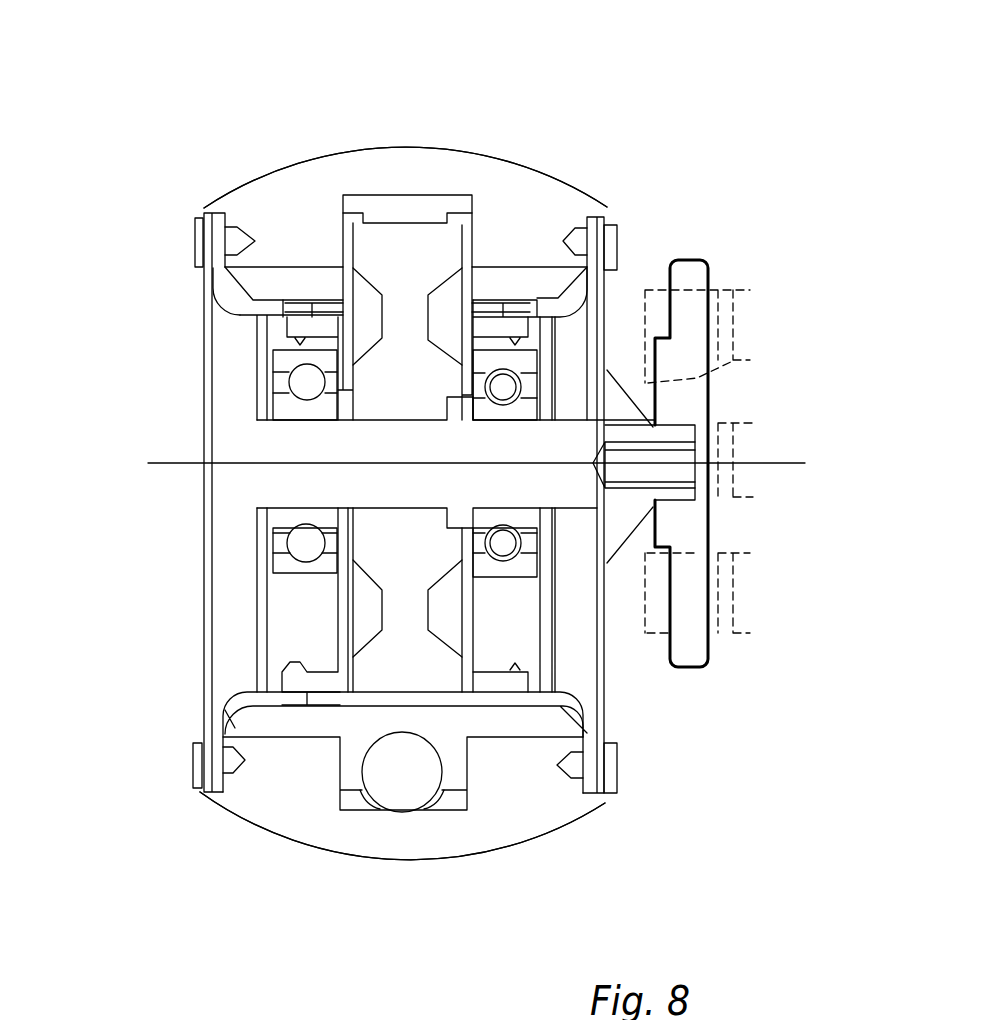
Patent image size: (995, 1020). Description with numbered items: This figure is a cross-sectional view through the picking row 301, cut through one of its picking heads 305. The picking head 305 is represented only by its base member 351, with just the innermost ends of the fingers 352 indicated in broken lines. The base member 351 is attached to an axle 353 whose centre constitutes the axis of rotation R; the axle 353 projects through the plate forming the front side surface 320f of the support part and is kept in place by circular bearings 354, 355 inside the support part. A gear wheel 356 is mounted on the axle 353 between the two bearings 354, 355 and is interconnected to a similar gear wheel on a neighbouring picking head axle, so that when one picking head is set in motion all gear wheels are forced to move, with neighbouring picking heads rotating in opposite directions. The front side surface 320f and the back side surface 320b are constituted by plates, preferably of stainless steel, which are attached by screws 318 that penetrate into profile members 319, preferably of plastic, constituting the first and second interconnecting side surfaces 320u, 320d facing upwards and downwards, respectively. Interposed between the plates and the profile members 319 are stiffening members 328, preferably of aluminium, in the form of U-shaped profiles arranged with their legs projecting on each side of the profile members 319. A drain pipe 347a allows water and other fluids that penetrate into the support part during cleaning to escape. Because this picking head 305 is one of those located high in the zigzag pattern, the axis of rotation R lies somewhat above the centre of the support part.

The picking row 301 is at (518, 137).
The picking head 305 is at (766, 254).
The screws 318 is at (197, 243).
The profile members 319 is at (460, 160).
The first interconnecting side surface 320u is at (342, 147).
The second interconnecting side surface 320d is at (533, 840).
The back side surface 320b is at (200, 590).
The front side surface 320f is at (611, 305).
The stiffening members 328 is at (222, 277).
The drain pipe 347a is at (395, 790).
The base member 351 is at (703, 663).
The fingers 352 is at (740, 607).
The axle 353 is at (283, 487).
The circular bearing 354 is at (510, 387).
The circular bearing 355 is at (297, 382).
The gear wheel 356 is at (397, 257).